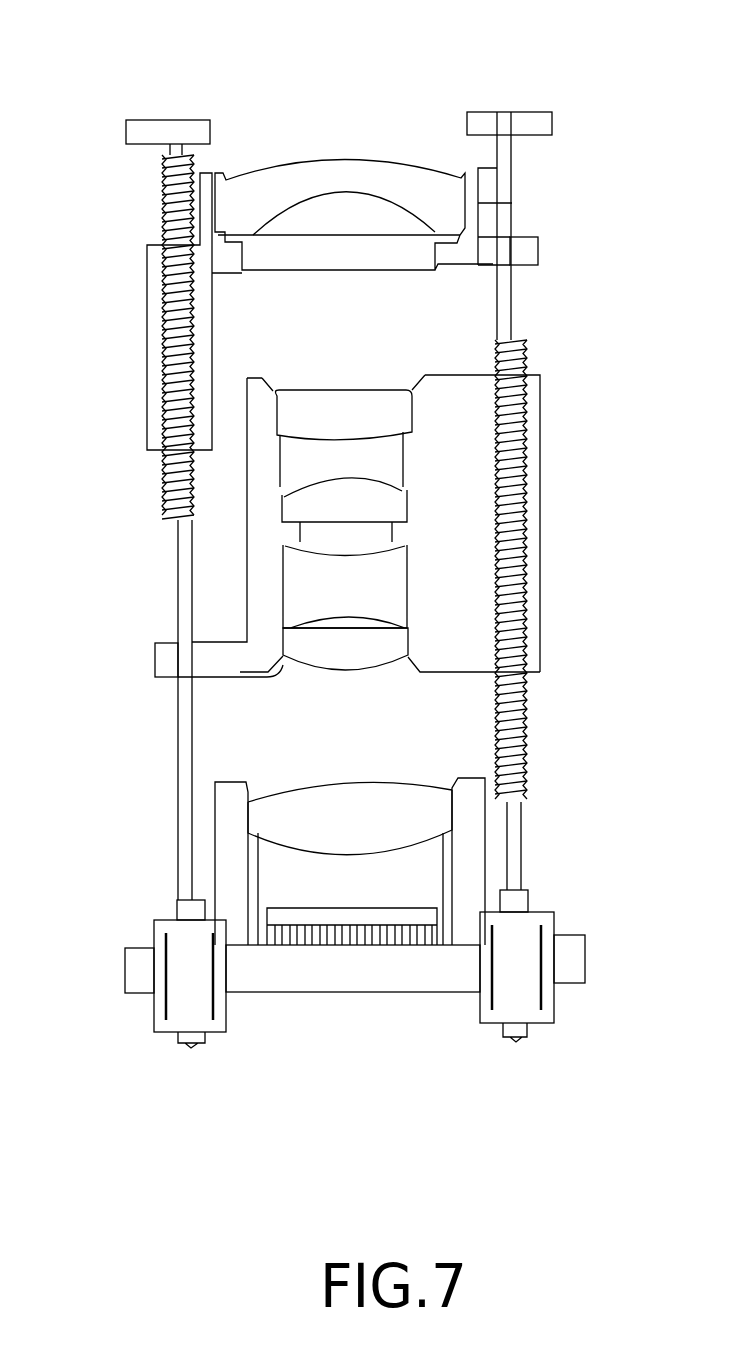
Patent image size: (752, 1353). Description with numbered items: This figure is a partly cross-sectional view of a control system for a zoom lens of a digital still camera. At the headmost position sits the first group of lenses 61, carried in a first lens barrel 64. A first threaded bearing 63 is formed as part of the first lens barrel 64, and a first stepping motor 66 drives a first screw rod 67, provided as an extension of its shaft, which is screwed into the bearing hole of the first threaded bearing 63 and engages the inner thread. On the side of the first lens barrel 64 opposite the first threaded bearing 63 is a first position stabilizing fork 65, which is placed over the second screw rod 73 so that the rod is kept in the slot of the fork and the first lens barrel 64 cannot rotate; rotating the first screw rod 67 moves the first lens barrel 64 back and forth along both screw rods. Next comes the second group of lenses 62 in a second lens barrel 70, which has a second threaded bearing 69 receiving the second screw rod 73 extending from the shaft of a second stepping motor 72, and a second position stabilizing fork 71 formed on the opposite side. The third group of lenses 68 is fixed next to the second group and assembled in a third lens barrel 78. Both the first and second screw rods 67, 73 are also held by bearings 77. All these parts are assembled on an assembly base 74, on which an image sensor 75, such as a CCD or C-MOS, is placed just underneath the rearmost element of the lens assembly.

The first group of lenses 61 is at (412, 222).
The second group of lenses 62 is at (376, 396).
The first threaded bearing 63 is at (148, 300).
The first lens barrel 64 is at (480, 205).
The first position stabilizing fork 65 is at (539, 252).
The first stepping motor 66 is at (152, 920).
The first screw rod 67 is at (164, 483).
The third group of lenses 68 is at (385, 783).
The second threaded bearing 69 is at (540, 530).
The second lens barrel 70 is at (258, 552).
The second position stabilizing fork 71 is at (158, 658).
The second stepping motor 72 is at (550, 918).
The second screw rod 73 is at (512, 312).
The assembly base 74 is at (403, 992).
The image sensor 75 is at (328, 945).
The bearings 77 is at (128, 130).
The third lens barrel 78 is at (236, 790).